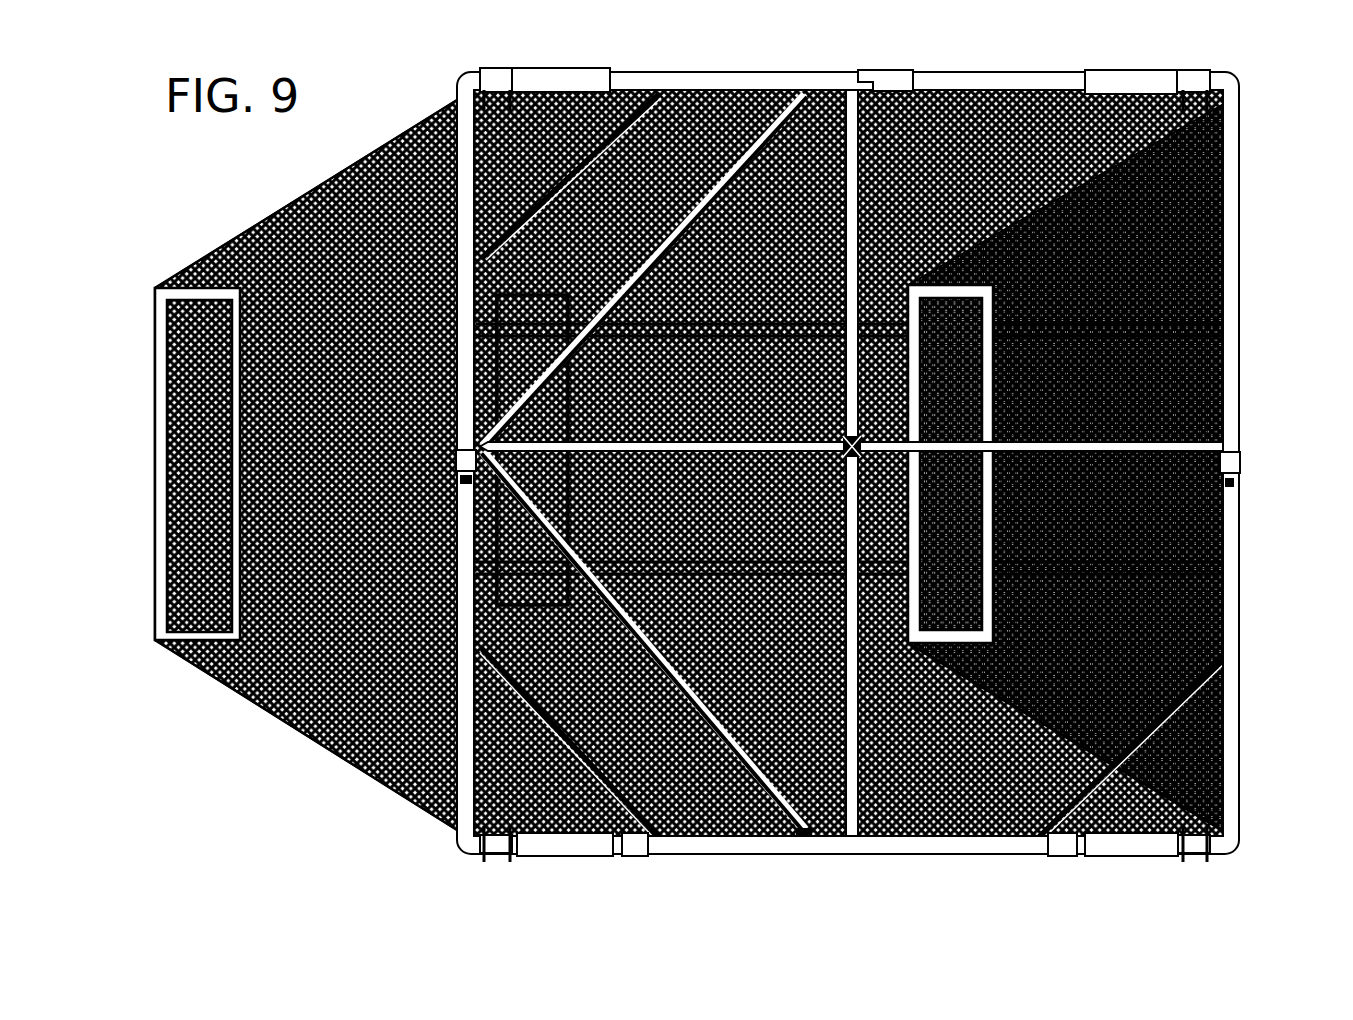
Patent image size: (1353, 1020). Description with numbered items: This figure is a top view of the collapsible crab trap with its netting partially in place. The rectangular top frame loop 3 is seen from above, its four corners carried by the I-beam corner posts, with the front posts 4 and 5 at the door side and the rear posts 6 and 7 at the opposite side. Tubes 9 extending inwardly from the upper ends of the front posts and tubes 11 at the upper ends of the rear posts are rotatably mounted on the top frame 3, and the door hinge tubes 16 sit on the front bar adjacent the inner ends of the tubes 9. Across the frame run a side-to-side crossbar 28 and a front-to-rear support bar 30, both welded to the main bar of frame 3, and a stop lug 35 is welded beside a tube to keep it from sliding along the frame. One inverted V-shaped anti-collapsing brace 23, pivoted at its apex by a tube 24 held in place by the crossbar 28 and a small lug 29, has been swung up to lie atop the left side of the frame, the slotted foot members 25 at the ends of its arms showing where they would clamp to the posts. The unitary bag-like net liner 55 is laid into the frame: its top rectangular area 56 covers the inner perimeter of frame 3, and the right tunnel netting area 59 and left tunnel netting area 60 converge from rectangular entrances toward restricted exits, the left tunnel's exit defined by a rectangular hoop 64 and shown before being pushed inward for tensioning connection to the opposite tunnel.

The top frame loop 3 is at (727, 72).
The front corner post 4 is at (1212, 856).
The front corner post 5 is at (490, 848).
The rear corner post 6 is at (1208, 72).
The rear corner post 7 is at (492, 70).
The upper front tube 9 is at (560, 856).
The upper rear tube 11 is at (558, 70).
The door hinge tube 16 is at (640, 856).
The anti-collapsing brace 23 is at (737, 770).
The tube 24 is at (1240, 463).
The slotted foot member 25 is at (802, 838).
The crossbar 28 is at (1225, 437).
The lug 29 is at (1235, 484).
The front-to-rear support bar 30 is at (862, 165).
The stop lug 35 is at (895, 75).
The net fabric crab pot liner structure 55 is at (358, 765).
The top rectangular area portion 56 is at (826, 132).
The right end tunnel area structure 59 is at (1020, 220).
The left end tunnel area structure 60 is at (300, 725).
The hoop 64 is at (160, 640).